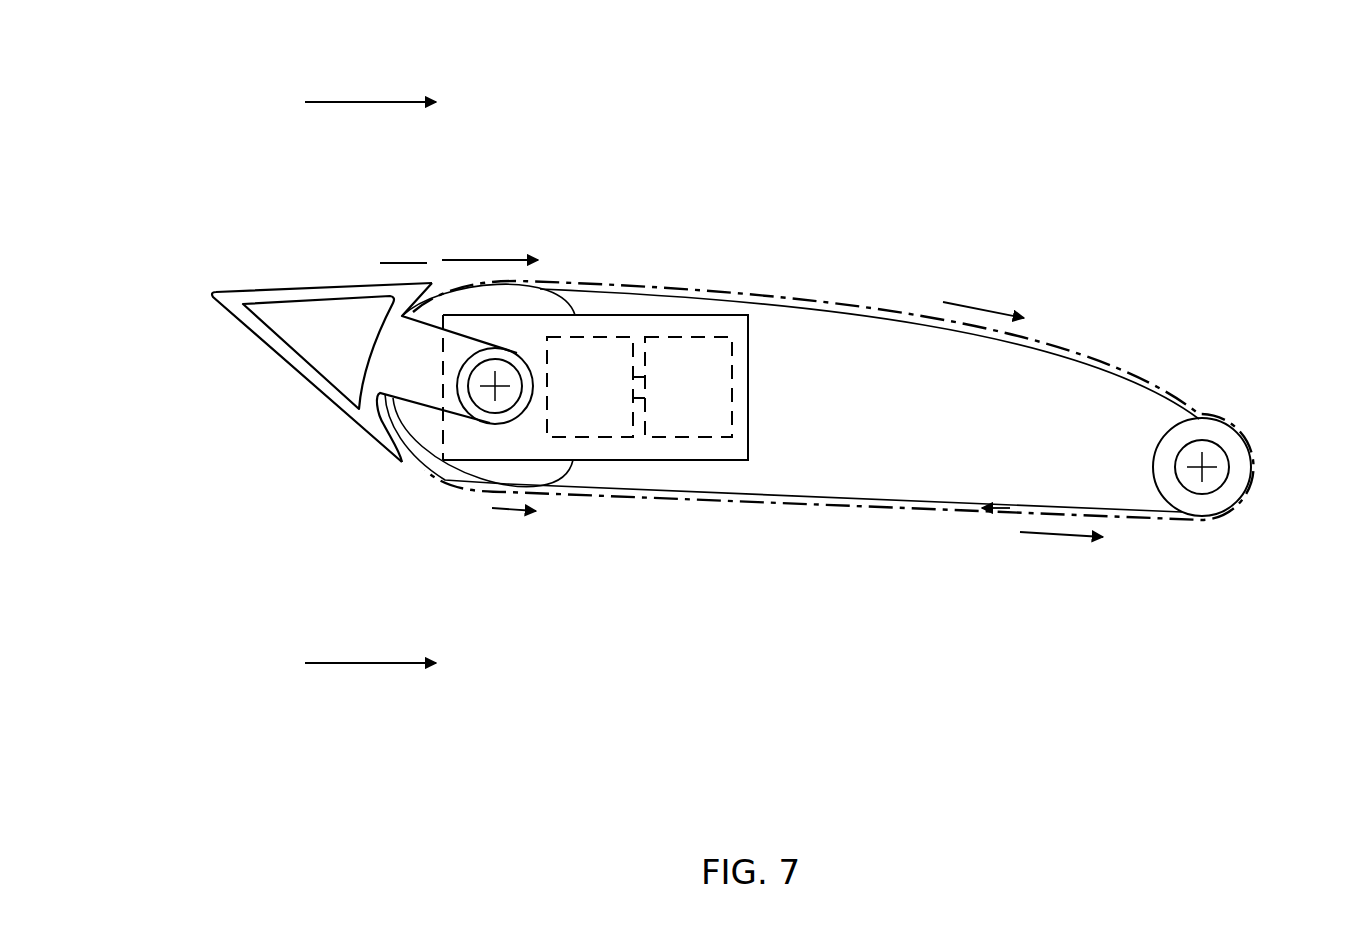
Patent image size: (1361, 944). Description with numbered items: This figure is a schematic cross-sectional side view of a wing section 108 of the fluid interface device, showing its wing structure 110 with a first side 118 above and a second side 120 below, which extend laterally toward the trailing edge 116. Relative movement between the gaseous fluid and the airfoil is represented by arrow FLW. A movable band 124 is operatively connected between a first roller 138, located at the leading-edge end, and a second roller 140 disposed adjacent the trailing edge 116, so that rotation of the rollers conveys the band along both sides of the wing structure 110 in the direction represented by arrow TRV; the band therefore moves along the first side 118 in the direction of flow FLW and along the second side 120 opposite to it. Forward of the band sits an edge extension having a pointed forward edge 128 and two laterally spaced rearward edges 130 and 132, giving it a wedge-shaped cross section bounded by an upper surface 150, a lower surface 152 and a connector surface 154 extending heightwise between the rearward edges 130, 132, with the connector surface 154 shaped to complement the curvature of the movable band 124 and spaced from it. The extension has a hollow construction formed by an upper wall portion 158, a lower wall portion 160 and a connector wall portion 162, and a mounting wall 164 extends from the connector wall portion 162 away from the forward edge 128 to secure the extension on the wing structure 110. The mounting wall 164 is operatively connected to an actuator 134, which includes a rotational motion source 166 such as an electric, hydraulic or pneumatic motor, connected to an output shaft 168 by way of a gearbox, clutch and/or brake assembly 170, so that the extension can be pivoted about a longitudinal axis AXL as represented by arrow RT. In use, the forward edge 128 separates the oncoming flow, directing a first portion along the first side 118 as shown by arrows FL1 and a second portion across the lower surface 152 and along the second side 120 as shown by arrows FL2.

The wing section 108 is at (658, 138).
The wing structure 110 is at (893, 306).
The trailing edge 116 is at (1253, 476).
The first side 118 is at (1012, 238).
The second side 120 is at (919, 630).
The movable band 124 is at (829, 289).
The forward edge 128 is at (212, 294).
The rearward edge 130 is at (432, 282).
The rearward edge 132 is at (403, 464).
The actuator 134 is at (727, 462).
The first roller 138 is at (488, 473).
The second roller 140 is at (1203, 505).
The upper surface 150 is at (263, 287).
The lower surface 152 is at (259, 338).
The connector surface 154 is at (402, 463).
The upper wall portion 158 is at (310, 296).
The lower wall portion 160 is at (298, 372).
The connector wall portion 162 is at (383, 468).
The mounting wall 164 is at (420, 360).
The rotational motion source 166 is at (672, 440).
The output shaft 168 is at (506, 400).
The gearbox, clutch and/or brake assembly 170 is at (597, 440).
The fluid flow arrow FLW is at (362, 100).
The first flow portion arrows FL1 is at (482, 257).
The second flow portion arrows FL2 is at (477, 502).
The band travel arrow TRV is at (690, 279).
The longitudinal axis AXL is at (497, 382).
The rotation arrow RT is at (171, 332).